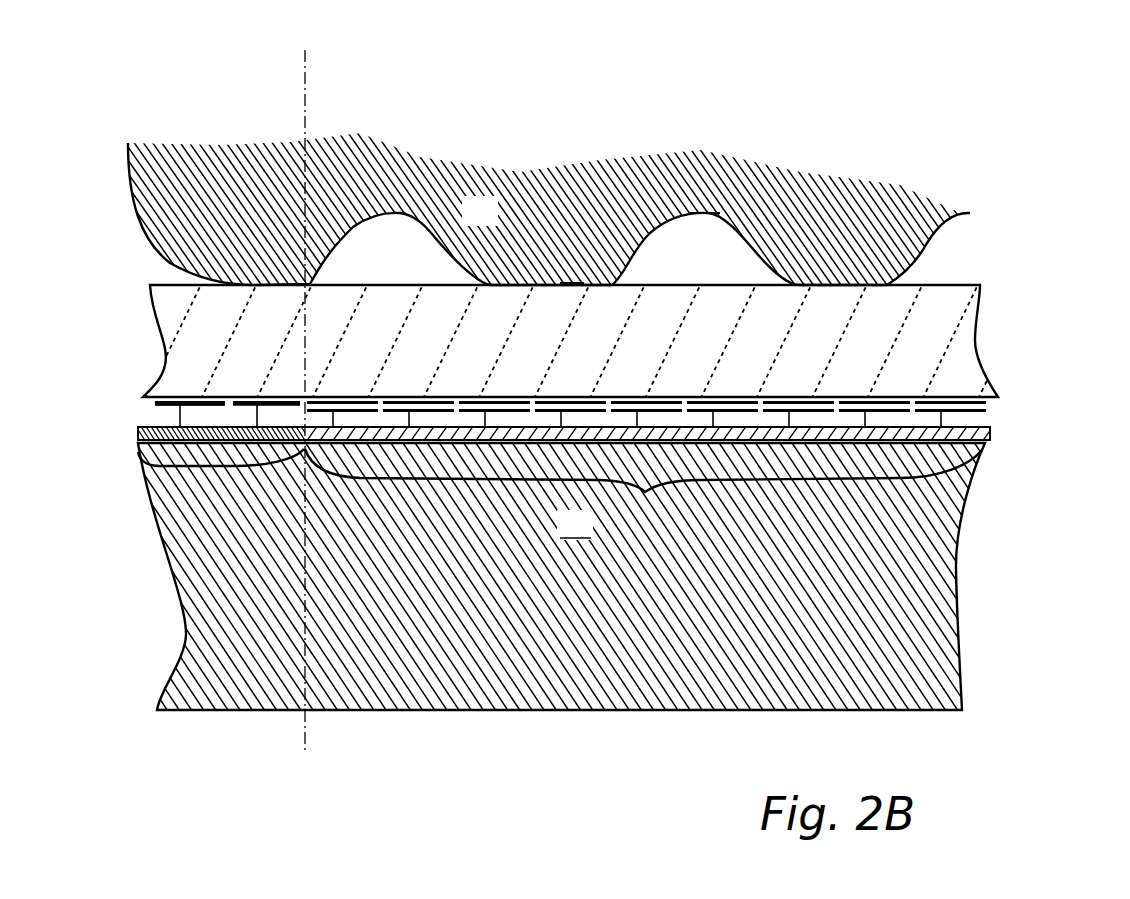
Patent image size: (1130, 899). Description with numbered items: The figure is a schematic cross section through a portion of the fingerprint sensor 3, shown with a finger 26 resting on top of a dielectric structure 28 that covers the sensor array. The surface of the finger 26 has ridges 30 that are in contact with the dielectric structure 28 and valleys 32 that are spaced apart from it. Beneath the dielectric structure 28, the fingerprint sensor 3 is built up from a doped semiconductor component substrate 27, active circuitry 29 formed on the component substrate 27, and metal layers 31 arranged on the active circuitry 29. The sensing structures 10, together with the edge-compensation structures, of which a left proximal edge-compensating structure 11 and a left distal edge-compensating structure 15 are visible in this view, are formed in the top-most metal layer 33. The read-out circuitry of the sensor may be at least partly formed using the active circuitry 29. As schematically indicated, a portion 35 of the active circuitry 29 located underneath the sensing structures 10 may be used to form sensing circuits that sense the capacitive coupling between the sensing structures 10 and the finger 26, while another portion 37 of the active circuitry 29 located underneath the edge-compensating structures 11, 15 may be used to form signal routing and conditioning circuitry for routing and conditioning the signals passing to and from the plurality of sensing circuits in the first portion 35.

The fingerprint sensor 3 is at (851, 60).
The sensing structures 10 is at (487, 400).
The left proximal edge-compensating structure 11 is at (274, 400).
The left distal edge-compensating structure 15 is at (208, 400).
The finger 26 is at (496, 224).
The component substrate 27 is at (565, 626).
The dielectric structure 28 is at (945, 349).
The active circuitry 29 is at (996, 433).
The ridges 30 is at (572, 285).
The metal layers 31 is at (599, 412).
The valleys 32 is at (708, 213).
The top-most metal layer 33 is at (120, 414).
The portion of the active circuitry 35 is at (645, 492).
The another portion of the active circuitry 37 is at (222, 466).